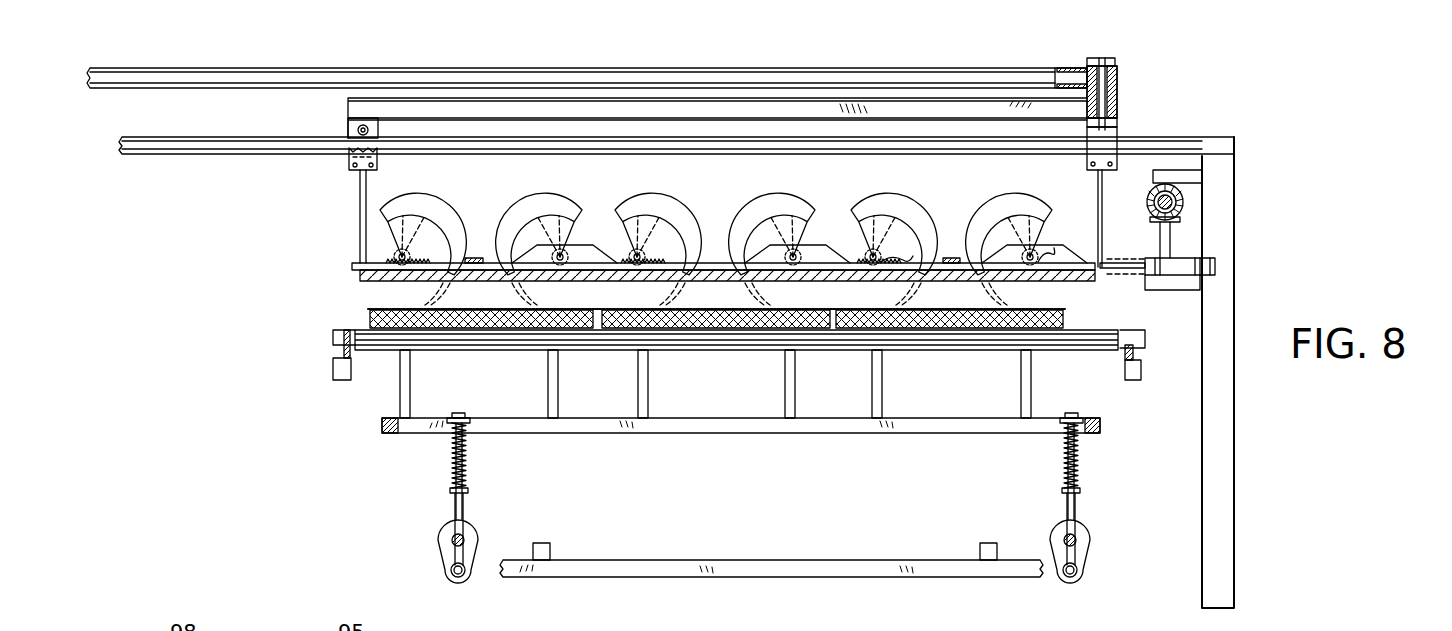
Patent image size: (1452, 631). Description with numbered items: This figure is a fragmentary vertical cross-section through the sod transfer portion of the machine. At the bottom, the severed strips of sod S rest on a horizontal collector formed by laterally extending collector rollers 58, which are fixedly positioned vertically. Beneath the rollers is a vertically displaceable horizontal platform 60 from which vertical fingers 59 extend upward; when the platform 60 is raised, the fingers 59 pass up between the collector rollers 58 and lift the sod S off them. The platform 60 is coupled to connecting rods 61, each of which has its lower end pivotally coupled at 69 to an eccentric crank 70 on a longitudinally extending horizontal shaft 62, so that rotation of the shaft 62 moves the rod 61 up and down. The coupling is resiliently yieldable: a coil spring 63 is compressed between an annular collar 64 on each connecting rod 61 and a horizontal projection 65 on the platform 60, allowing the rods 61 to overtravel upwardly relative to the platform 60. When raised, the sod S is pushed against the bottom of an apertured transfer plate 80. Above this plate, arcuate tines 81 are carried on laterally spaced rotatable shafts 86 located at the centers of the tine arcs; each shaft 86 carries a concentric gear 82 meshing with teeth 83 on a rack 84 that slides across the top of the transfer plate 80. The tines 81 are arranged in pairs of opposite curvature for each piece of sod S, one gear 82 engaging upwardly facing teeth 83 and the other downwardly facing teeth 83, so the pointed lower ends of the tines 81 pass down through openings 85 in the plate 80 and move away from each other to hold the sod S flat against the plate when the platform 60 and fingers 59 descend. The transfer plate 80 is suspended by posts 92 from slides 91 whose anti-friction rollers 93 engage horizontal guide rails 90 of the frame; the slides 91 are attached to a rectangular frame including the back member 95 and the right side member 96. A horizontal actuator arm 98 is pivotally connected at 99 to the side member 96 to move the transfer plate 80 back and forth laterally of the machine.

The collector rollers 58 is at (731, 346).
The vertical fingers 59 is at (410, 381).
The horizontal platform 60 is at (760, 436).
The connecting rods 61 is at (465, 503).
The horizontal shafts 62 is at (453, 538).
The coil spring 63 is at (468, 452).
The annular collar 64 is at (450, 490).
The horizontal projection 65 is at (466, 414).
The pivotal coupling 69 is at (450, 573).
The eccentric crank 70 is at (475, 548).
The transfer plate 80 is at (1062, 283).
The arcuate tines 81 is at (410, 207).
The gear 82 is at (411, 257).
The teeth 83 is at (905, 257).
The rack 84 is at (696, 263).
The openings 85 is at (440, 282).
The rotatable shafts 86 is at (395, 253).
The guide rails 90 is at (961, 148).
The slides 91 is at (360, 201).
The posts 92 is at (349, 165).
The anti-friction rollers 93 is at (356, 128).
The back member 95 is at (771, 108).
The right side member 96 is at (1118, 106).
The actuator arm 98 is at (790, 78).
The pivotal connection 99 is at (1115, 70).
The sod S is at (470, 308).